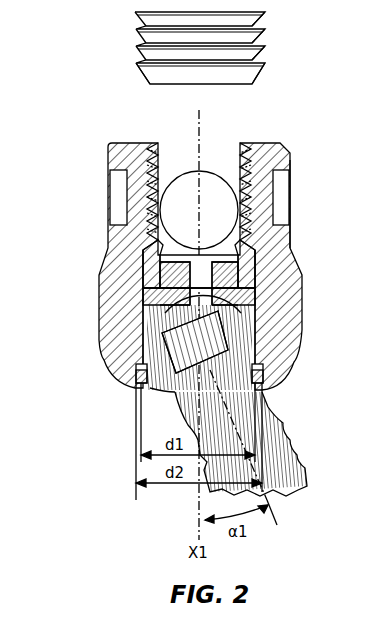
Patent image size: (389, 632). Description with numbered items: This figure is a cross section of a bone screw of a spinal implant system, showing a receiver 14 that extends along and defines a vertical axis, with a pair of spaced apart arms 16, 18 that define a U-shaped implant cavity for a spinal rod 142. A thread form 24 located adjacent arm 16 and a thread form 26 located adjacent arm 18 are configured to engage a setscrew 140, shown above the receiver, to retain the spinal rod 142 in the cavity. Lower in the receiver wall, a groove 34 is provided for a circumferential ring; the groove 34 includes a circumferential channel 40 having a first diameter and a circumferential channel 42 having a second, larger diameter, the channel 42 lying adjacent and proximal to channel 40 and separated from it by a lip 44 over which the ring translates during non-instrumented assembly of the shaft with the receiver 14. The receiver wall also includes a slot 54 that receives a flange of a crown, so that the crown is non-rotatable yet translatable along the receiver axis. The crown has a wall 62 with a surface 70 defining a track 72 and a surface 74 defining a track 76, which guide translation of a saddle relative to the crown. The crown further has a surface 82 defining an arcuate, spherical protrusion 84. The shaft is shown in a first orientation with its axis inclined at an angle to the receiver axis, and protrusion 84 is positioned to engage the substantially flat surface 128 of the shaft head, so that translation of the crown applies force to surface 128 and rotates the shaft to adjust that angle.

The receiver 14 is at (63, 189).
The arm 16 is at (287, 146).
The arm 18 is at (112, 152).
The thread form 24 is at (243, 143).
The thread form 26 is at (150, 142).
The groove 34 is at (268, 380).
The circumferential channel 40 is at (148, 392).
The circumferential channel 42 is at (140, 372).
The lip 44 is at (136, 380).
The slot 54 is at (250, 282).
The wall 62 is at (248, 257).
The surface 70 is at (245, 275).
The track 72 is at (240, 268).
The surface 74 is at (162, 268).
The track 76 is at (165, 271).
The surface 82 is at (237, 310).
The protrusion 84 is at (263, 366).
The surface 128 is at (178, 342).
The setscrew 140 is at (240, 62).
The spinal rod 142 is at (213, 203).